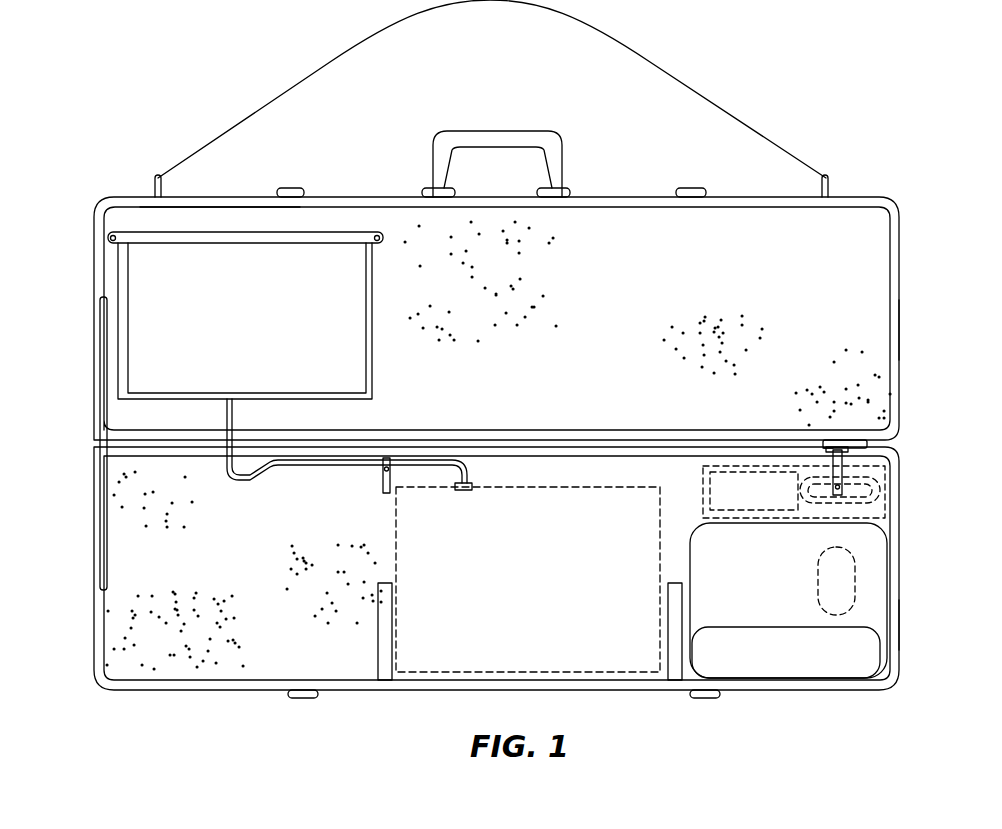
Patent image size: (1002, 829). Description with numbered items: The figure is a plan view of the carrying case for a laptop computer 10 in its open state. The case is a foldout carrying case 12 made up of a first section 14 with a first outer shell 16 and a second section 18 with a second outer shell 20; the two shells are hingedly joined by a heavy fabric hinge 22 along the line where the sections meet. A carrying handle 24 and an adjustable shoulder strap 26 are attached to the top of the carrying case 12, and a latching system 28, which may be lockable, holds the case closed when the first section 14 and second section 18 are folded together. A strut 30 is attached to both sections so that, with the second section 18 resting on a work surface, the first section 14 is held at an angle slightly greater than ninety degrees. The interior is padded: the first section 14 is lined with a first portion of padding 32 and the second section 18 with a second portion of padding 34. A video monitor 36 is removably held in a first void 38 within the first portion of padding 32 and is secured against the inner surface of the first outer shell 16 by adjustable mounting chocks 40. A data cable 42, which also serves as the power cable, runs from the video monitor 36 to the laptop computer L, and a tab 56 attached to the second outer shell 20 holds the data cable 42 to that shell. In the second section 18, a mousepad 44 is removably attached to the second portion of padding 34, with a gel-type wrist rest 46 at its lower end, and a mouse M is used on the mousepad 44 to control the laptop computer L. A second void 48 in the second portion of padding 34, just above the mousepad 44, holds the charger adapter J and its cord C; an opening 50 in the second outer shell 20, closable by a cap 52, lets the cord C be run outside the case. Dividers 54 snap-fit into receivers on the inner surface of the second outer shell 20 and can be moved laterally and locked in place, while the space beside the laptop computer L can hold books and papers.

The carrying case for a laptop computer 10 is at (97, 83).
The foldout carrying case 12 is at (905, 245).
The first section 14 is at (878, 216).
The first outer shell 16 is at (898, 325).
The second section 18 is at (893, 662).
The second outer shell 20 is at (900, 637).
The hinge 22 is at (866, 444).
The carrying handle 24 is at (517, 142).
The shoulder strap 26 is at (690, 88).
The latching system 28 is at (291, 186).
The strut 30 is at (102, 452).
The first portion of padding 32 is at (862, 293).
The second portion of padding 34 is at (167, 645).
The video monitor 36 is at (180, 304).
The first void 38 is at (197, 218).
The adjustable mounting chocks 40 is at (125, 238).
The data cable 42 is at (228, 413).
The mousepad 44 is at (875, 570).
The wrist rest 46 is at (840, 660).
The second void 48 is at (706, 465).
The opening 50 is at (826, 452).
The cap 52 is at (834, 450).
The dividers 54 is at (385, 665).
The tab 56 is at (383, 484).
The charger adapter J is at (788, 503).
The cord C is at (893, 483).
The mouse M is at (858, 590).
The laptop computer L is at (552, 672).